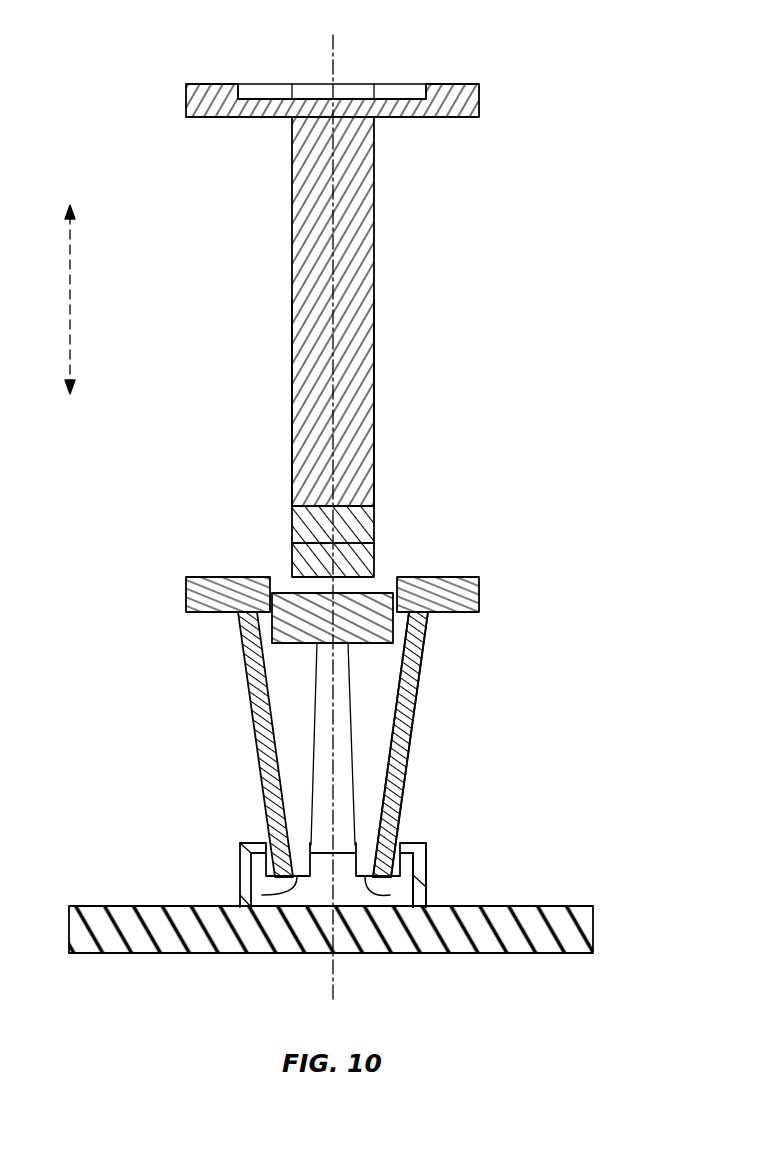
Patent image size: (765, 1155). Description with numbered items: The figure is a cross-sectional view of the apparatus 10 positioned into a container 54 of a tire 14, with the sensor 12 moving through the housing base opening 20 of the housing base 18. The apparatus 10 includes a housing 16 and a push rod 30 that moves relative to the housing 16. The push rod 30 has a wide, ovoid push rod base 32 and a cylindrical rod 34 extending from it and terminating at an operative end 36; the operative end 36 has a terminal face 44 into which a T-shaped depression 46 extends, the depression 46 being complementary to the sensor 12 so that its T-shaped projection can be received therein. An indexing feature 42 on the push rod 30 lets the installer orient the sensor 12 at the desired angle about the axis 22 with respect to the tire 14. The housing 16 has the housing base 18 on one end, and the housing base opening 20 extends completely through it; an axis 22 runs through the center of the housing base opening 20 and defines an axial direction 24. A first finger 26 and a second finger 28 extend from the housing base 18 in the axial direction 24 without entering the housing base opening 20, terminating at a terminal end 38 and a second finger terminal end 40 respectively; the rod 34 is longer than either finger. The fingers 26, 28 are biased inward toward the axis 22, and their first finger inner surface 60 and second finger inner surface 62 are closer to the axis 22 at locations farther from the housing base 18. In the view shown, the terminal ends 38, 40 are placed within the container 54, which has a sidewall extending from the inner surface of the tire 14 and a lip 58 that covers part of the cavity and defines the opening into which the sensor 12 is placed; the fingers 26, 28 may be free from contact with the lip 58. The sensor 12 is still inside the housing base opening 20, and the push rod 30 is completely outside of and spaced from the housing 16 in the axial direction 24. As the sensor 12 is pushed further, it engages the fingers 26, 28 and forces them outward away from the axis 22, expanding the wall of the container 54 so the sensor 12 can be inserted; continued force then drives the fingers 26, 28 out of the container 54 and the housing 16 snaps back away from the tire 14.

The apparatus 10 is at (547, 219).
The sensor 12 is at (293, 570).
The tire 14 is at (160, 906).
The housing 16 is at (415, 702).
The housing base 18 is at (481, 590).
The housing base opening 20 is at (387, 580).
The axis 22 is at (340, 56).
The axial direction 24 is at (70, 300).
The first finger 26 is at (250, 702).
The second finger 28 is at (395, 810).
The push rod 30 is at (368, 212).
The push rod base 32 is at (452, 83).
The rod 34 is at (368, 348).
The operative end 36 is at (373, 520).
The terminal end 38 is at (262, 895).
The second finger terminal end 40 is at (390, 895).
The indexing feature 42 is at (260, 83).
The terminal face 44 is at (362, 550).
The depression 46 is at (293, 522).
The container 54 is at (426, 870).
The lip 58 is at (418, 842).
The first finger inner surface 60 is at (275, 672).
The second finger inner surface 62 is at (391, 672).